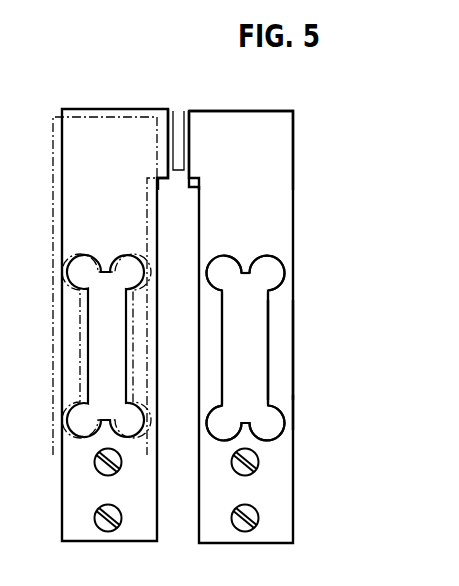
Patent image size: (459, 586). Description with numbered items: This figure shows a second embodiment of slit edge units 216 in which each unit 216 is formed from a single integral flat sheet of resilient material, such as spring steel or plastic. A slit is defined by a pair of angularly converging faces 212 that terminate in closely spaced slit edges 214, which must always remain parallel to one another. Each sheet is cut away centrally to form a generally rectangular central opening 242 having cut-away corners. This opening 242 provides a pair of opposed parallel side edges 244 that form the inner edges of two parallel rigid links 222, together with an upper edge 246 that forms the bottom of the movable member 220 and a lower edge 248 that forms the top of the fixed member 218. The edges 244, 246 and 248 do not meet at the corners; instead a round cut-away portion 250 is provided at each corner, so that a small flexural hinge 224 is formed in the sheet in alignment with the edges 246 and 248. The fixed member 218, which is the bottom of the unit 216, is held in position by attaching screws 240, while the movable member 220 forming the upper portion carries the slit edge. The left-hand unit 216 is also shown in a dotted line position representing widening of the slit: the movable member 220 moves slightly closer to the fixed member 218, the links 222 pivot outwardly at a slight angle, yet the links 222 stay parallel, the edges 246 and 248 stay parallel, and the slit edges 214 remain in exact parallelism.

The angularly converging faces 212 is at (178, 175).
The slit edges 214 is at (176, 128).
The slit edge unit 216 is at (304, 412).
The fixed member 218 is at (298, 507).
The movable member 220 is at (282, 168).
The link members 222 is at (278, 352).
The flexural joint 224 is at (288, 270).
The attaching screws 240 is at (235, 514).
The central opening 242 is at (248, 325).
The side edges 244 is at (268, 387).
The upper edge 246 is at (245, 276).
The lower edge 248 is at (250, 406).
The cut-away portion 250 is at (266, 262).